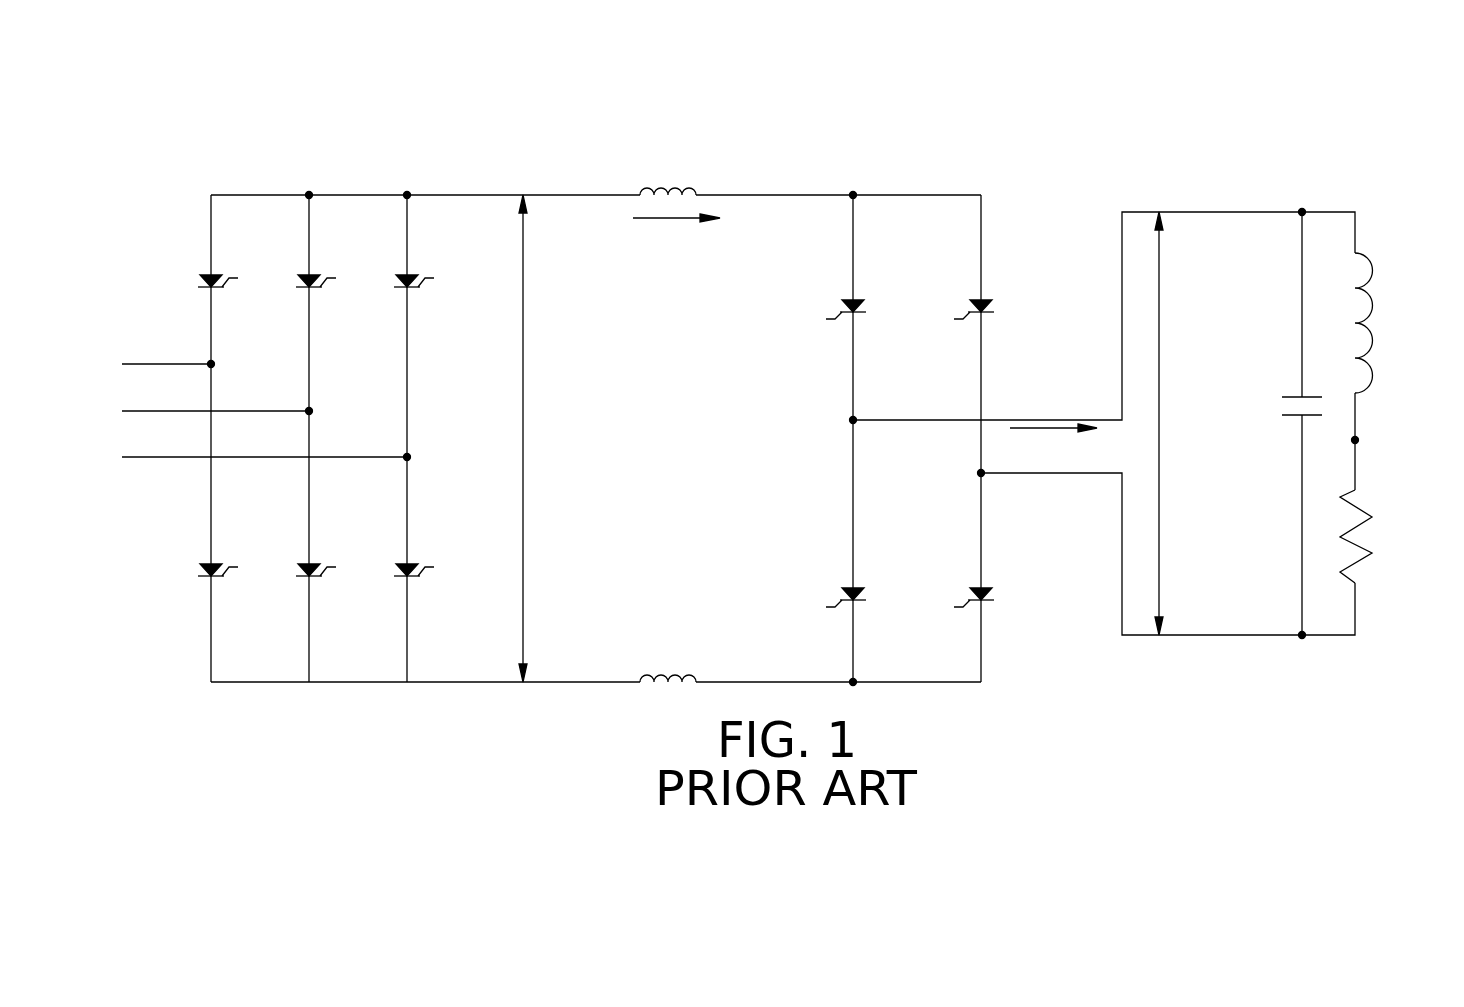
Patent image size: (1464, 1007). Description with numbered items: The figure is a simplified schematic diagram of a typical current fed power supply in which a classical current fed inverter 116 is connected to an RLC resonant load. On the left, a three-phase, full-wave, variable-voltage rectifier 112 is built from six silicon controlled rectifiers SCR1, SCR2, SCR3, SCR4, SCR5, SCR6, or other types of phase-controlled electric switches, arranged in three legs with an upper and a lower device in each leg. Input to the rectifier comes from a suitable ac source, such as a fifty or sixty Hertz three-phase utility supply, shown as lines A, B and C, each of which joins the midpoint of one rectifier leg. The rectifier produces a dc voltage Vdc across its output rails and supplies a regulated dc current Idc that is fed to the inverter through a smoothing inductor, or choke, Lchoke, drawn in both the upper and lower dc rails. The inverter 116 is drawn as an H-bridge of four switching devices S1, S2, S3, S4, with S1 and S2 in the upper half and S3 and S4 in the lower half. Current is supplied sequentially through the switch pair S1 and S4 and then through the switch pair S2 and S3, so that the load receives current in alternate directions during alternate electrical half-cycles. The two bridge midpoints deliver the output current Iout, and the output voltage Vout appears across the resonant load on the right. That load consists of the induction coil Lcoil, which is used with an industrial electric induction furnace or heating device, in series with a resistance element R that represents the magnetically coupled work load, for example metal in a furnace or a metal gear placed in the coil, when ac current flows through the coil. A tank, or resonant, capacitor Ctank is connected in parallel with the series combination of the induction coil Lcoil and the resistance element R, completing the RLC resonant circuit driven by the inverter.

The variable-voltage rectifier 112 is at (266, 389).
The current fed inverter 116 is at (921, 391).
The silicon controlled rectifier SCR1 is at (189, 261).
The silicon controlled rectifier SCR2 is at (289, 261).
The silicon controlled rectifier SCR3 is at (388, 261).
The silicon controlled rectifier SCR4 is at (189, 553).
The silicon controlled rectifier SCR5 is at (289, 553).
The silicon controlled rectifier SCR6 is at (388, 553).
The switching device S1 is at (841, 291).
The switching device S2 is at (990, 291).
The switching device S3 is at (841, 577).
The switching device S4 is at (990, 577).
The three-phase supply line A is at (157, 365).
The three-phase supply line B is at (206, 413).
The three-phase supply line C is at (255, 460).
The smoothing inductor Lchoke is at (661, 416).
The dc current Idc is at (676, 238).
The dc voltage Vdc is at (536, 438).
The inverter output current Iout is at (1050, 407).
The inverter output voltage Vout is at (1198, 423).
The tank capacitor Ctank is at (1264, 423).
The induction coil Lcoil is at (1395, 323).
The resistance element R is at (1372, 536).